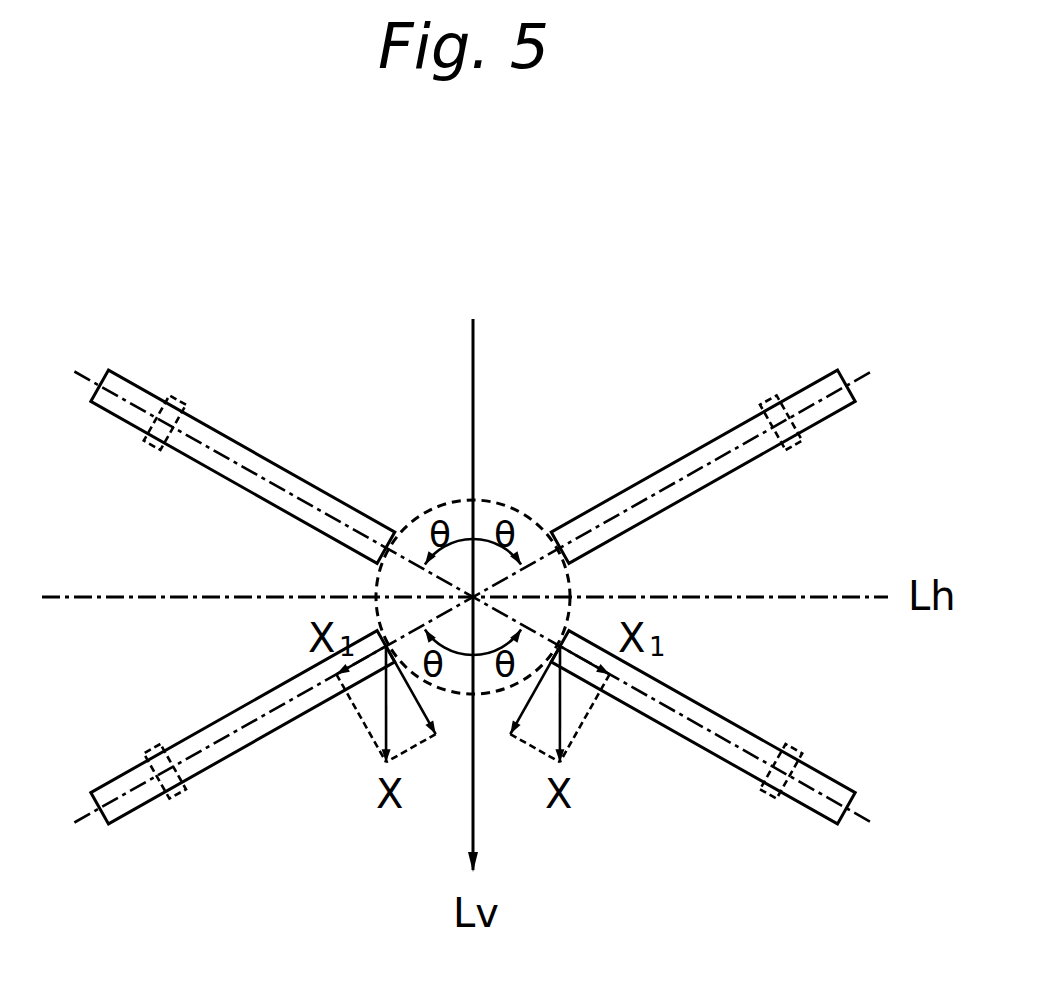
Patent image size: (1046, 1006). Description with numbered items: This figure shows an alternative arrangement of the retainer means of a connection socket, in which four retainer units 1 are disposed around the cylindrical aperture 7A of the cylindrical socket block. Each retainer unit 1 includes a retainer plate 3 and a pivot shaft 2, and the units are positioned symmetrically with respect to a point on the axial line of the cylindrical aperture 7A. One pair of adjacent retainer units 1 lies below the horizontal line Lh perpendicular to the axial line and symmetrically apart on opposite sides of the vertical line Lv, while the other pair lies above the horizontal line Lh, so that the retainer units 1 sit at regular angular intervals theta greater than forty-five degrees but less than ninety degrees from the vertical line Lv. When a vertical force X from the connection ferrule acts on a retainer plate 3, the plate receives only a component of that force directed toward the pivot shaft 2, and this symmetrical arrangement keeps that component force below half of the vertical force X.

The retainer unit 1 is at (472, 620).
The pivot shaft 2 is at (143, 448).
The retainer plate 3 is at (233, 483).
The cylindrical aperture 7A is at (433, 505).